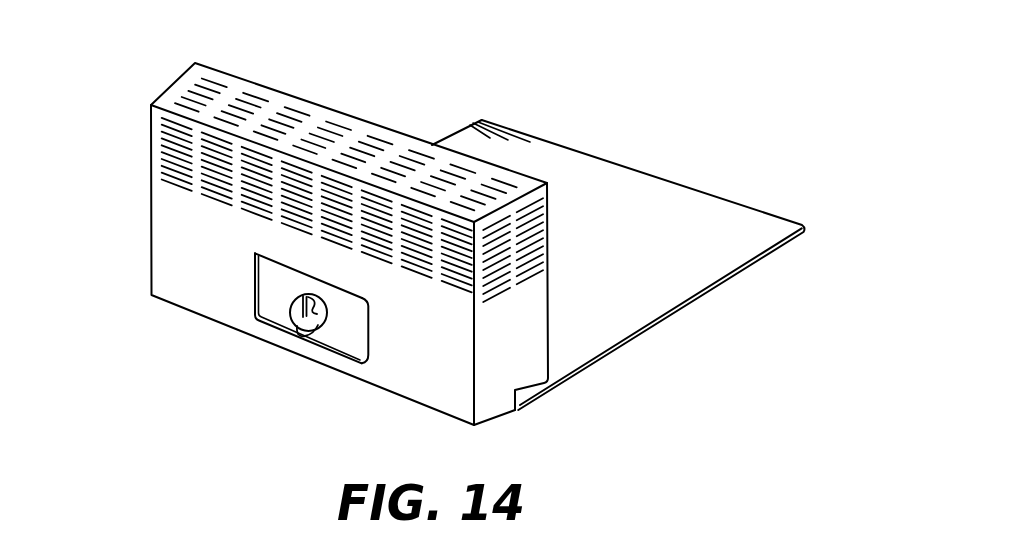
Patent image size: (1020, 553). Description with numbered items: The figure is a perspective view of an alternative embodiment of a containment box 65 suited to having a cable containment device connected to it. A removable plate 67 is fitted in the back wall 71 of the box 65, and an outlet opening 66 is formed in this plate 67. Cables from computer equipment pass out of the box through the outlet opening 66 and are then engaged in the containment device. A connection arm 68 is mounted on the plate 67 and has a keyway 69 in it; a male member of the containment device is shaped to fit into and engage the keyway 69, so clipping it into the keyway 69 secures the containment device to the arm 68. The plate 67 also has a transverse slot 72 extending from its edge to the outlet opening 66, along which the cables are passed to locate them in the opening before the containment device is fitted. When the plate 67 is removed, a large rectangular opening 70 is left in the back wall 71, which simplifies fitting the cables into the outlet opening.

The box 65 is at (400, 125).
The outlet opening 66 is at (300, 332).
The removable plate 67 is at (350, 347).
The connection arm 68 is at (291, 312).
The keyway 69 is at (319, 311).
The rectangular opening 70 is at (359, 325).
The back wall 71 is at (445, 367).
The transverse slot 72 is at (300, 336).